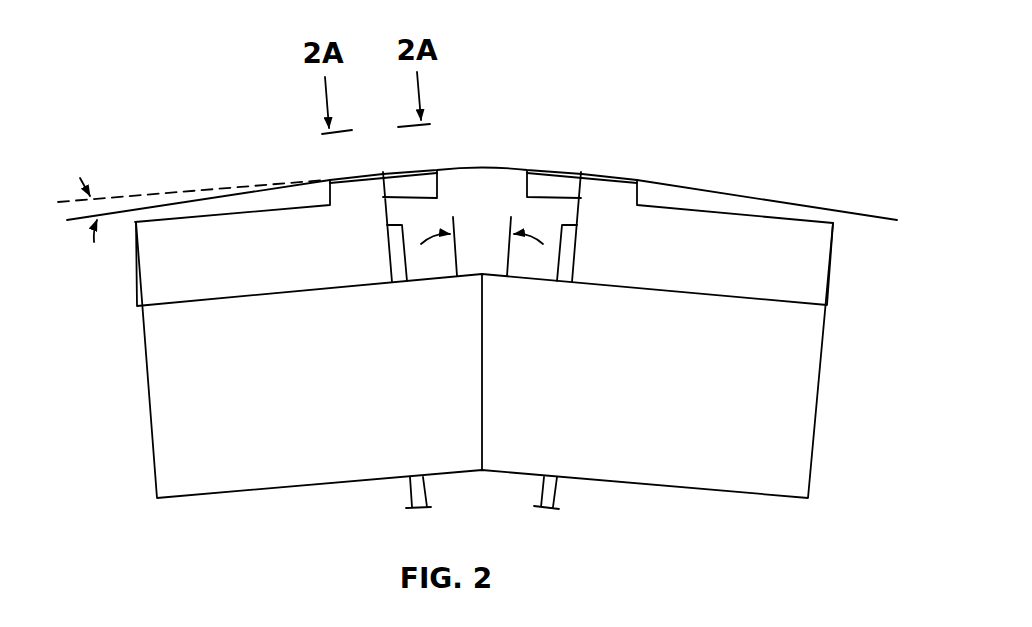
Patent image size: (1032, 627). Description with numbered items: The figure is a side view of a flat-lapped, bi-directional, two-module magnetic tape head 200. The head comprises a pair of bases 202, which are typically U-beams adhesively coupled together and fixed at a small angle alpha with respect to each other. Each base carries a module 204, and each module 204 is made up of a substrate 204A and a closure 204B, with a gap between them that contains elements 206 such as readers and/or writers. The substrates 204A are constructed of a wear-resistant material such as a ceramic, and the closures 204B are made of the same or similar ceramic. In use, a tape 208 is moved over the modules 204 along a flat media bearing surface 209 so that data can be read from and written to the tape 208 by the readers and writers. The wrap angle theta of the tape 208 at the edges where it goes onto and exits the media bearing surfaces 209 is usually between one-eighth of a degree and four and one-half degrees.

The magnetic tape head 200 is at (193, 130).
The bases 202 is at (146, 377).
The module 204 is at (137, 270).
The substrate 204A is at (202, 247).
The closure 204B is at (527, 190).
The elements 206 is at (388, 168).
The tape 208 is at (738, 195).
The media bearing surface 209 is at (335, 173).